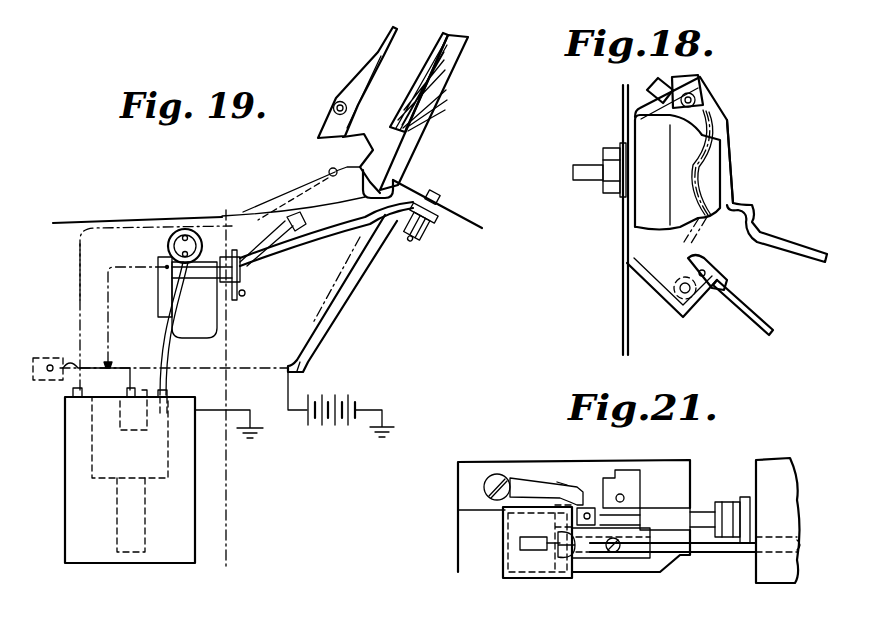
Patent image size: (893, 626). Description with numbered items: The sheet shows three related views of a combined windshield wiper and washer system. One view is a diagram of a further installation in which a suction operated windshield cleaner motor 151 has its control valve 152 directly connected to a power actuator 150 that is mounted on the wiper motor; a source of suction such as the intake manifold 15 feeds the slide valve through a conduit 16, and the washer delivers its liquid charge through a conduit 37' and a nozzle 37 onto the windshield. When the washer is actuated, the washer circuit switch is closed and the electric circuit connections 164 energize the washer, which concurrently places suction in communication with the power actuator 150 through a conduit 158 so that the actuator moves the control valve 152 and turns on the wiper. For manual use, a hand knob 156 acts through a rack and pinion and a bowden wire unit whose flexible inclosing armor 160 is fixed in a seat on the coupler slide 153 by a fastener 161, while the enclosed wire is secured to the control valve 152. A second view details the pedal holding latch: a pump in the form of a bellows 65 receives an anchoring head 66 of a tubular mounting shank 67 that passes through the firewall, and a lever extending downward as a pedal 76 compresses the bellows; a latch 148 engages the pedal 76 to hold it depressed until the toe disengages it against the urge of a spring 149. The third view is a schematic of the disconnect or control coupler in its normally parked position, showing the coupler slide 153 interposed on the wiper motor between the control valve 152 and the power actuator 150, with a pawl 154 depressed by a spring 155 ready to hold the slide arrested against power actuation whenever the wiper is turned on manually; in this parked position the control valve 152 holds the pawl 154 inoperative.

In FIG. 19, the intake manifold 15 is at (28, 360).
In FIG. 19, the conduit 16 is at (110, 300).
In FIG. 19, the nozzle 37 is at (293, 180).
In FIG. 19, the conduit 37' is at (58, 281).
In FIG. 19, the bellows 65 is at (125, 412).
In FIG. 18, the bellows 65 is at (684, 152).
In FIG. 19, the anchoring head 66 is at (95, 456).
In FIG. 18, the tubular mounting shank 67 is at (588, 178).
In FIG. 18, the pedal 76 is at (803, 249).
In FIG. 18, the latch 148 is at (722, 266).
In FIG. 18, the spring 149 is at (657, 282).
In FIG. 19, the power actuator 150 is at (188, 229).
In FIG. 21, the power actuator 150 is at (777, 468).
In FIG. 19, the windshield cleaner motor 151 is at (205, 318).
In FIG. 21, the control valve 152 is at (527, 573).
In FIG. 21, the coupler slide 153 is at (600, 560).
In FIG. 21, the pawl 154 is at (510, 480).
In FIG. 21, the spring 155 is at (605, 466).
In FIG. 19, the hand knob 156 is at (444, 203).
In FIG. 19, the conduit 158 is at (165, 350).
In FIG. 19, the flexible inclosing armor 160 is at (302, 248).
In FIG. 21, the flexible inclosing armor 160 is at (712, 555).
In FIG. 21, the fastener 161 is at (620, 552).
In FIG. 19, the electric circuit connections 164 is at (257, 420).